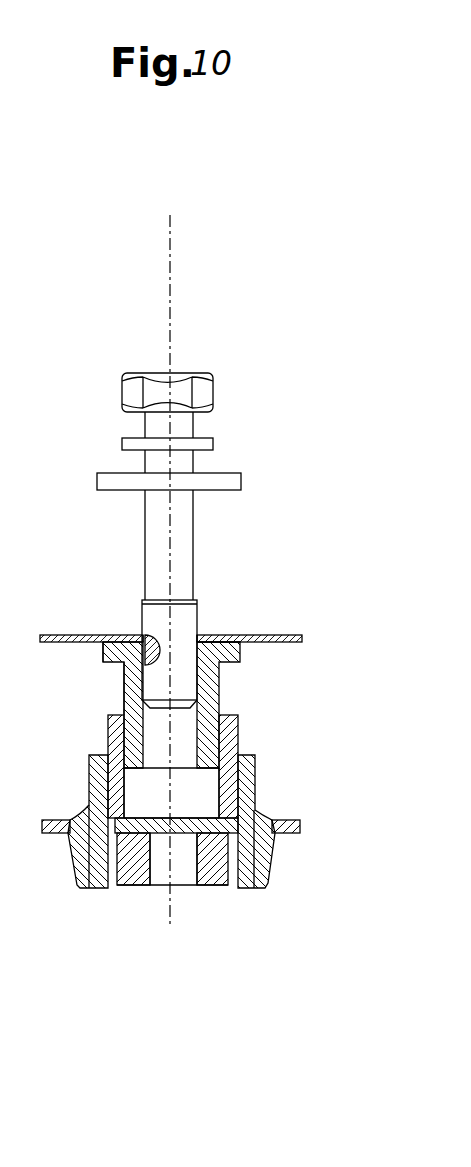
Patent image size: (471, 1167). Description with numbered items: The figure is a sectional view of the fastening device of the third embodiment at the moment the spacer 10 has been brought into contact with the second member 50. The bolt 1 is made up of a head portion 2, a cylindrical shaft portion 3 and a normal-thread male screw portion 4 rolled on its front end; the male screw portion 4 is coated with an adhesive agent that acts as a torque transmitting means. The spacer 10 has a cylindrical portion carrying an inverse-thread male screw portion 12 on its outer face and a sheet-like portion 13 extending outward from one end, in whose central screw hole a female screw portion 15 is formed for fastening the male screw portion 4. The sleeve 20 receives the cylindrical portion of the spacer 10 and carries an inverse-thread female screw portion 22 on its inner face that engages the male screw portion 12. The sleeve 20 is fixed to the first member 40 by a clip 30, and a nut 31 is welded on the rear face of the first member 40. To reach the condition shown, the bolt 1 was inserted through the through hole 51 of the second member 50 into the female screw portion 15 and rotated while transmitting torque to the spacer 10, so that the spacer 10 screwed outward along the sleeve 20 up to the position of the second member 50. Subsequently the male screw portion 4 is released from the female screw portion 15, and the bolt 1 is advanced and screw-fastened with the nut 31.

The bolt 1 is at (193, 420).
The head portion 2 is at (202, 388).
The cylindrical shaft portion 3 is at (185, 535).
The male screw portion 4 is at (143, 622).
The spacer 10 is at (222, 687).
The male screw portion 12 is at (123, 690).
The sheet-like portion 13 is at (110, 652).
The female screw portion 15 is at (220, 634).
The sleeve 20 is at (240, 728).
The female screw portion 22 is at (127, 877).
The clip 30 is at (260, 813).
The nut 31 is at (215, 878).
The first member 40 is at (295, 817).
The second member 50 is at (287, 630).
The through hole 51 is at (203, 633).